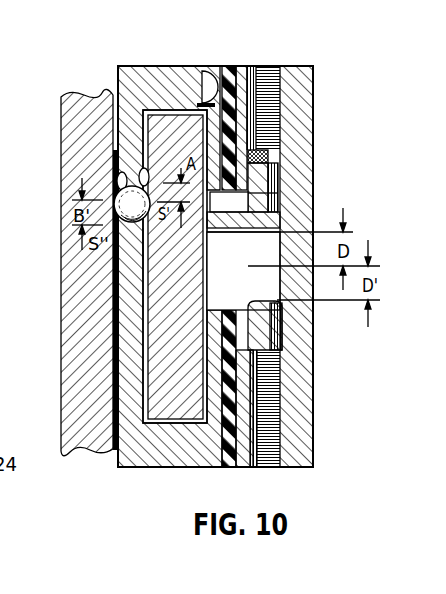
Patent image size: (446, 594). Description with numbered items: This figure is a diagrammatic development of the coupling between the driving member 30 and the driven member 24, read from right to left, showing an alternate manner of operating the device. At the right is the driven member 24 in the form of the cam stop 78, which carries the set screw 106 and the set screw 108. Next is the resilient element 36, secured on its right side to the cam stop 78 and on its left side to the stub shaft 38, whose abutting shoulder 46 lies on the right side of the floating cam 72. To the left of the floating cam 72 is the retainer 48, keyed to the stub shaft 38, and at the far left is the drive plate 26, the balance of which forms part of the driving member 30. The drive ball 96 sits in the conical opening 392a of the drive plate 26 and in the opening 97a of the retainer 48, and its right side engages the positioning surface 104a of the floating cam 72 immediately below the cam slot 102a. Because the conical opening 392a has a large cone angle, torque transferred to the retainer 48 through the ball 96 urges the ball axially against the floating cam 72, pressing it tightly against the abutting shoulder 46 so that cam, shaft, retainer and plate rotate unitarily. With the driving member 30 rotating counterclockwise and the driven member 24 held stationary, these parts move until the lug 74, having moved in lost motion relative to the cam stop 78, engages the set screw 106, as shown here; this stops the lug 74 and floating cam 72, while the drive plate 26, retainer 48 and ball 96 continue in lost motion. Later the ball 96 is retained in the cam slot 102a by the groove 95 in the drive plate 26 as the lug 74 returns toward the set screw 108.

The driven member 24 is at (320, 149).
The drive plate 26 is at (87, 272).
The driving member 30 is at (51, 131).
The resilient element 36 is at (234, 468).
The stub shaft 38 is at (222, 468).
The abutting shoulder 46 is at (211, 306).
The retainer 48 is at (151, 468).
The floating cam 72 is at (175, 267).
The lug 74 is at (246, 229).
The cam stop 78 is at (296, 108).
The groove 95 is at (116, 340).
The drive ball 96 is at (148, 227).
The opening 97a is at (128, 186).
The cam slot 102a is at (149, 180).
The positioning surface 104a is at (150, 372).
The set screw 106 is at (264, 181).
The set screw 108 is at (262, 332).
The conical opening 392a is at (133, 187).